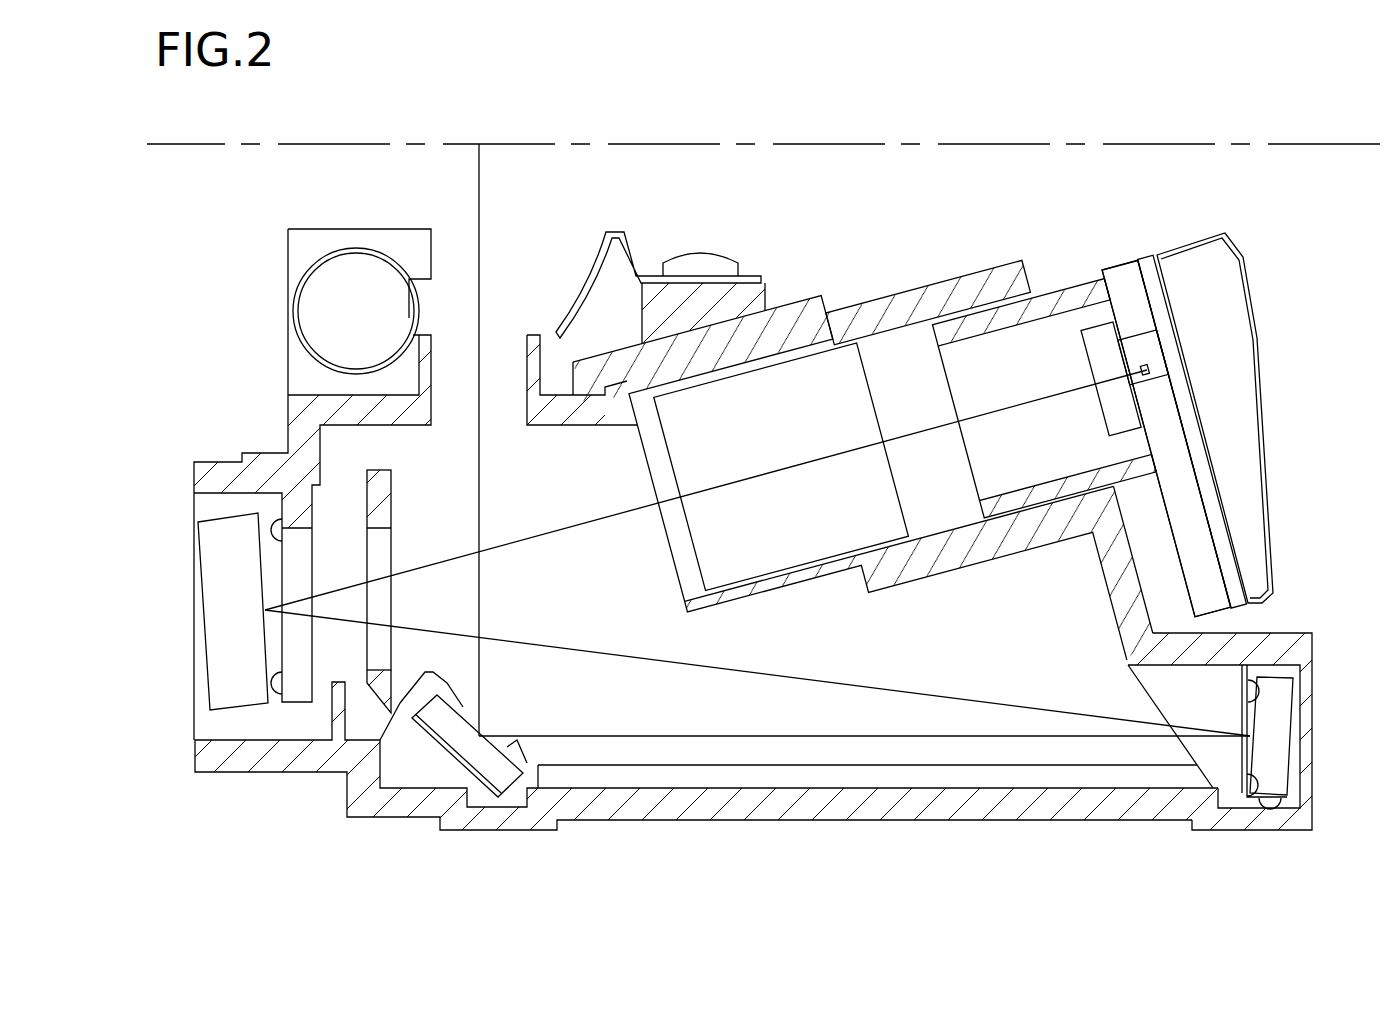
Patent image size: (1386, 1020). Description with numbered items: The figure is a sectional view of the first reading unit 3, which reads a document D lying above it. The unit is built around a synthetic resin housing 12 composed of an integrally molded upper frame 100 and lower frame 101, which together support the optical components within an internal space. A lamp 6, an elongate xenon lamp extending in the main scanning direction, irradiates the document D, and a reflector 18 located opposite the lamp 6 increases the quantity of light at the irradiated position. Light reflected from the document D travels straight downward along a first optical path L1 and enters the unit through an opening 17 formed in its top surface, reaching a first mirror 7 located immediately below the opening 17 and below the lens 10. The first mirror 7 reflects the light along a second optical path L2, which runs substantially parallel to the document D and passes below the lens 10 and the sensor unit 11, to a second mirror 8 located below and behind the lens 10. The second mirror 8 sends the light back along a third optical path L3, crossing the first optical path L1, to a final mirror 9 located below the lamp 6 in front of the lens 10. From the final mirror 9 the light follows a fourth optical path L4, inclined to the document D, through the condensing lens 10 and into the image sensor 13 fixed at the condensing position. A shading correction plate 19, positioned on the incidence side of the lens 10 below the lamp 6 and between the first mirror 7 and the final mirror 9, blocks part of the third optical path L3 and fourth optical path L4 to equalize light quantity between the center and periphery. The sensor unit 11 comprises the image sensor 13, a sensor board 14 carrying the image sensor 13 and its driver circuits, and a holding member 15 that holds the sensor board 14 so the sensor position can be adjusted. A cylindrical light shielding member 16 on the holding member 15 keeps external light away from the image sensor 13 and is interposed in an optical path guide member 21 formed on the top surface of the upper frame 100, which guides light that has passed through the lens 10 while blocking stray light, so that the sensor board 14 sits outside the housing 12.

The first reading unit 3 is at (1319, 310).
The lamp 6 is at (298, 259).
The first reflection mirror 7 is at (498, 795).
The second reflection mirror 8 is at (1272, 730).
The third reflection mirror 9 is at (222, 612).
The condensing lens 10 is at (790, 558).
The sensor unit 11 is at (1144, 244).
The housing 12 is at (1324, 614).
The image sensor 13 is at (1153, 348).
The sensor board 14 is at (1190, 430).
The holding member 15 is at (1183, 502).
The light shielding member 16 is at (1050, 300).
The opening 17 is at (510, 316).
The reflector 18 is at (623, 232).
The shading correction plate 19 is at (382, 506).
The optical path guide member 21 is at (950, 290).
The upper frame 100 is at (795, 303).
The lower frame 101 is at (768, 805).
The document D is at (195, 147).
The first optical path L1 is at (485, 462).
The second optical path L2 is at (570, 736).
The third optical path L3 is at (933, 698).
The fourth optical path L4 is at (565, 538).